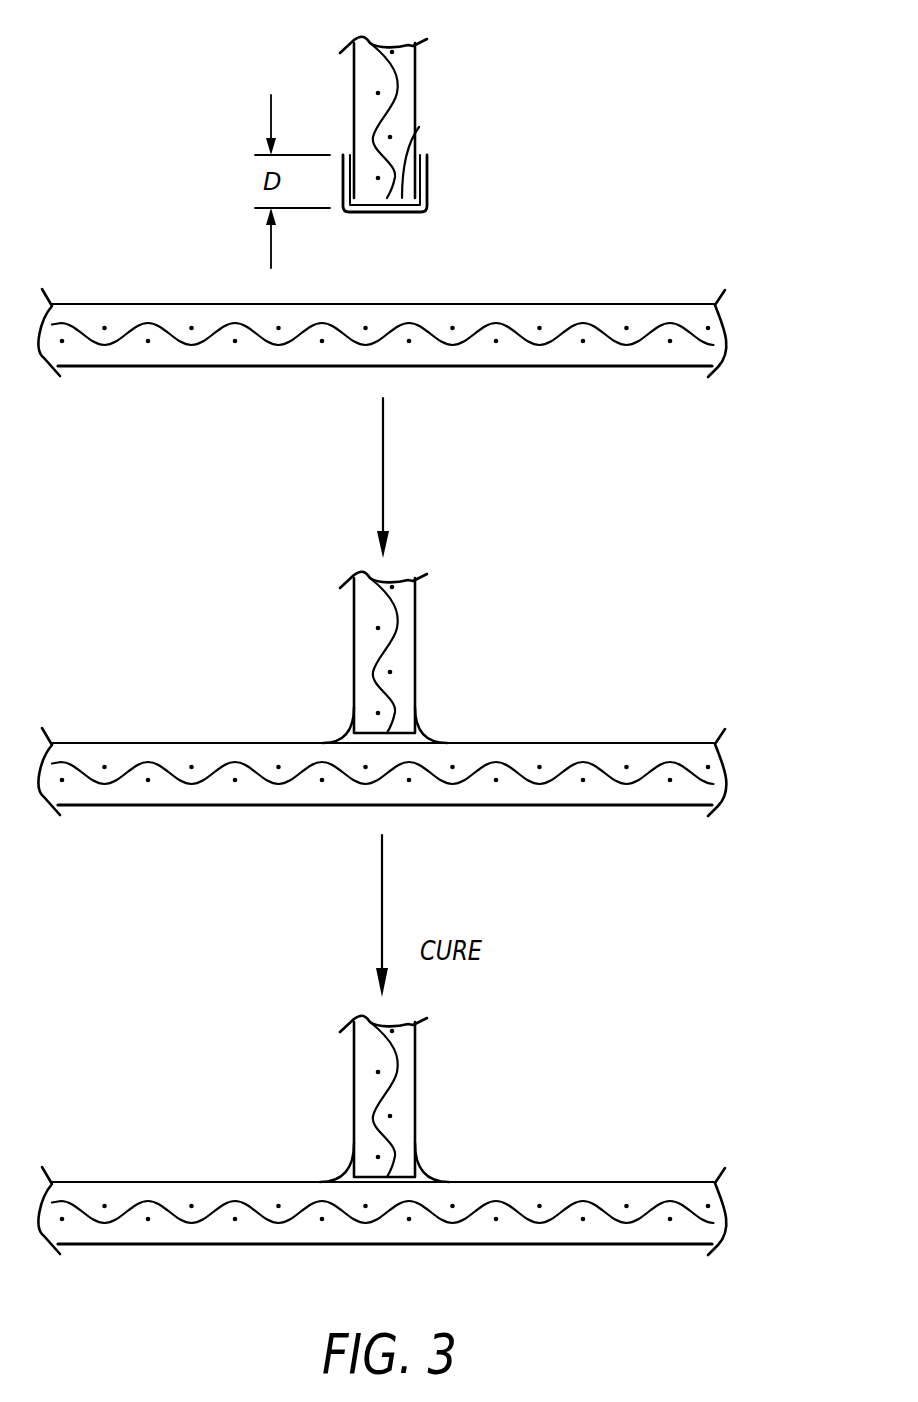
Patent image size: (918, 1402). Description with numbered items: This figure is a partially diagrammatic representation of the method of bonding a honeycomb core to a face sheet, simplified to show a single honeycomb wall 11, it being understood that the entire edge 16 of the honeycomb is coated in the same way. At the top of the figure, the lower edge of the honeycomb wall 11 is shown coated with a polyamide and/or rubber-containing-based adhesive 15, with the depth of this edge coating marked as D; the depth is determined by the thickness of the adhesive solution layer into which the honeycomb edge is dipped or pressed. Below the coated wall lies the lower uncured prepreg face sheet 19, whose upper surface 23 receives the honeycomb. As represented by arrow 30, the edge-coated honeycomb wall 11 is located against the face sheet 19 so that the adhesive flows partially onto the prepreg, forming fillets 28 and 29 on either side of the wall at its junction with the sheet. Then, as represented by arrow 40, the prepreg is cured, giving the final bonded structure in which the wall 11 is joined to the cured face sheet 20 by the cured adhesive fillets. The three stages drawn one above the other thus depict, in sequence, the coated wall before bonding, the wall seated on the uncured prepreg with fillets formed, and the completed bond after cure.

The honeycomb wall 11 is at (405, 73).
The polyamide and/or rubber-containing-based adhesive 15 is at (425, 180).
The edge of the honeycomb 16 is at (413, 138).
The prepreg face sheet 19 is at (642, 313).
The bonding surface of panel 23 is at (110, 303).
The fillet 28 is at (340, 728).
The fillet 29 is at (427, 732).
The arrow 30 is at (383, 503).
The arrow 40 is at (382, 938).
The cured face sheet 20 is at (664, 1188).